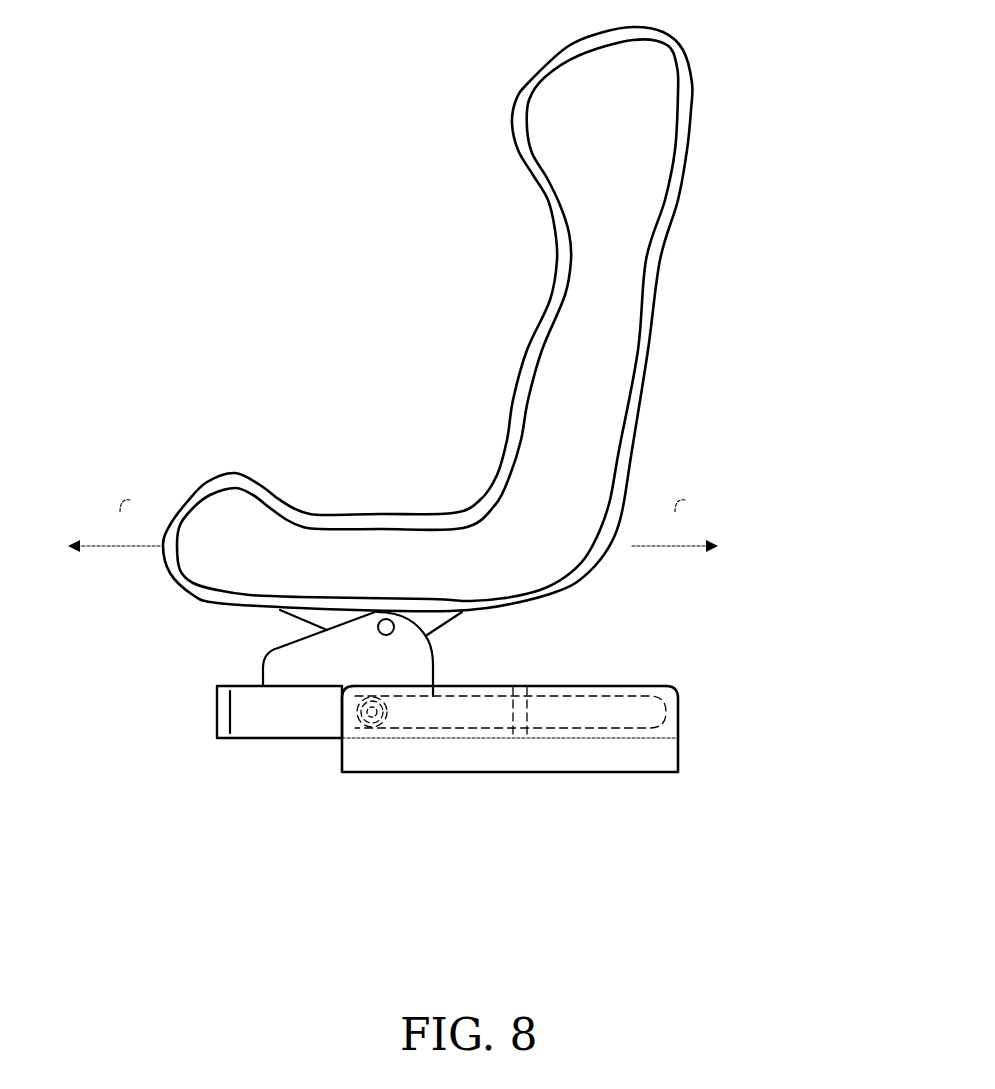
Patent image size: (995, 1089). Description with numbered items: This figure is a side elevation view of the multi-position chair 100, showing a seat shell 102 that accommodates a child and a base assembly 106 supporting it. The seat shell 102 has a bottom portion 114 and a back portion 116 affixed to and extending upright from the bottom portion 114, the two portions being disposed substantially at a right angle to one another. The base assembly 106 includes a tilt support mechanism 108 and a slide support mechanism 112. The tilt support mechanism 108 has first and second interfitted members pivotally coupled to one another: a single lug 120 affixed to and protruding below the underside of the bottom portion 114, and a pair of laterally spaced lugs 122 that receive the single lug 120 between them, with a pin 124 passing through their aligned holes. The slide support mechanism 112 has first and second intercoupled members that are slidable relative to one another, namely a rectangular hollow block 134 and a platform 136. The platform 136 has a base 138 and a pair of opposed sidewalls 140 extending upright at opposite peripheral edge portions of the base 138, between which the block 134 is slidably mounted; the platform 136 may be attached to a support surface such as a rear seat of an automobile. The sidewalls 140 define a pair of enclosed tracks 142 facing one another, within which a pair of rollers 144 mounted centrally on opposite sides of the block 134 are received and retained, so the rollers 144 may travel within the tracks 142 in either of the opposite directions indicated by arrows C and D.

The multi-position chair 100 is at (236, 114).
The seat shell 102 is at (699, 206).
The base assembly 106 is at (727, 620).
The tilt support mechanism 108 is at (272, 632).
The slide support mechanism 112 is at (320, 750).
The bottom portion 114 is at (378, 572).
The back portion 116 is at (585, 396).
The single lug 120 is at (457, 618).
The pair of lugs 122 is at (272, 660).
The pin 124 is at (394, 627).
The hollow block 134 is at (242, 737).
The platform 136 is at (481, 774).
The base 138 is at (640, 775).
The pair of opposed sidewalls 140 is at (633, 686).
The enclosed tracks 142 is at (577, 740).
The rollers 144 is at (417, 740).